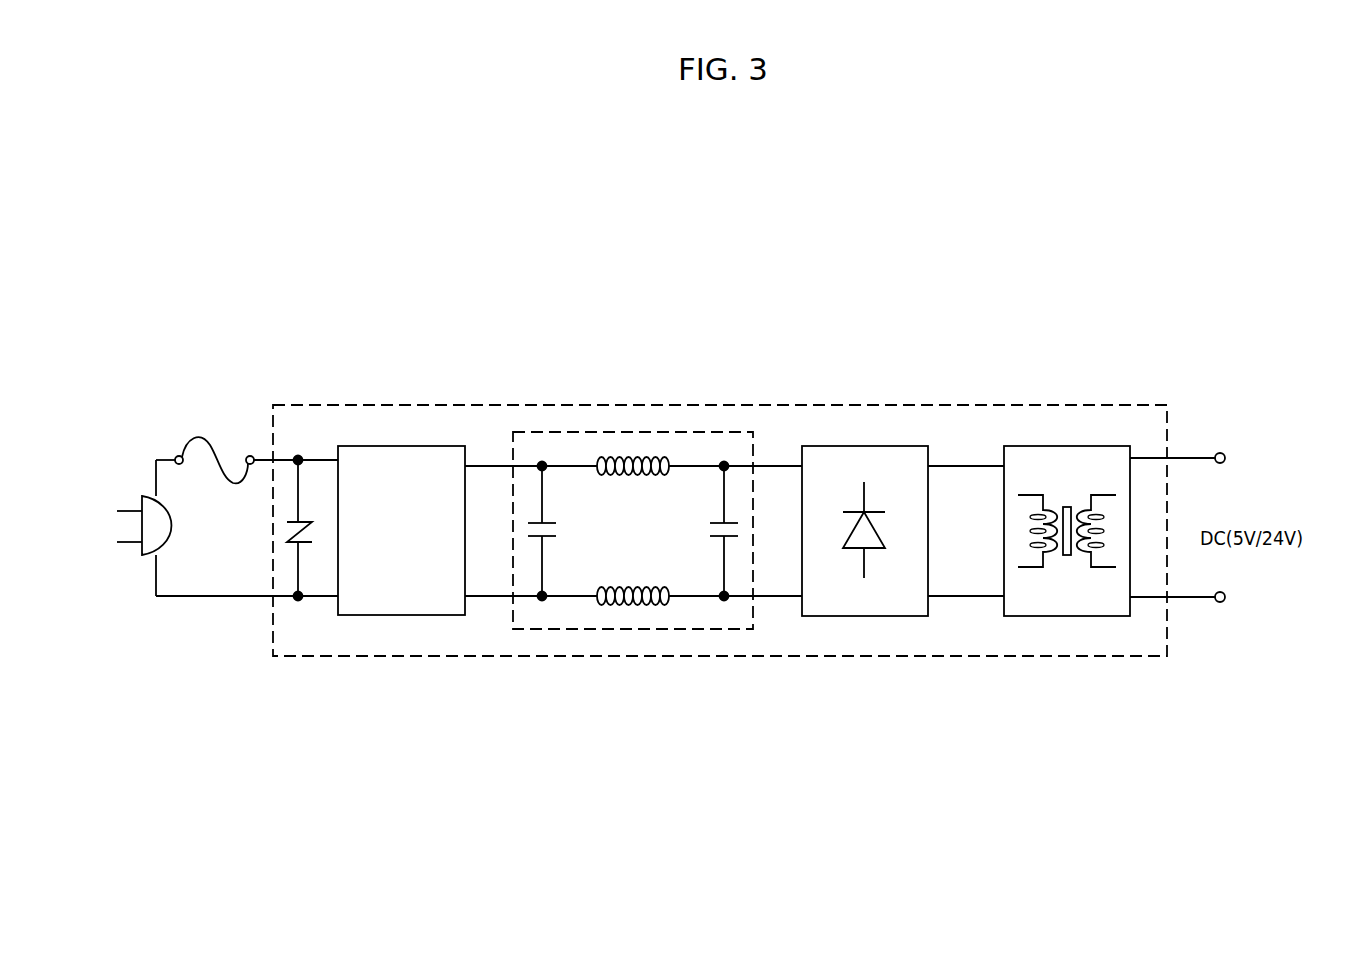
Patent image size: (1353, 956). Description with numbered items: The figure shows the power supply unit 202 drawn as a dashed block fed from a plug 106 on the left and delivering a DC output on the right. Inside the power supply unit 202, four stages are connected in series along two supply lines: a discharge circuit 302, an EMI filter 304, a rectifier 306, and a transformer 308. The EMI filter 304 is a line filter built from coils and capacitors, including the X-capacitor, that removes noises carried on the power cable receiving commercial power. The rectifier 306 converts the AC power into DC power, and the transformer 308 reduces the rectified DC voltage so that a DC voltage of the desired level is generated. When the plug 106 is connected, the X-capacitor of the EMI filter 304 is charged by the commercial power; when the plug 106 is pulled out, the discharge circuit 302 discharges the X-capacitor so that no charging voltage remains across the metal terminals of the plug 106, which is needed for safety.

The plug 106 is at (147, 507).
The power supply unit 202 is at (333, 405).
The discharge circuit 302 is at (415, 446).
The EMI filter 304 is at (640, 432).
The rectifier 306 is at (866, 446).
The transformer 308 is at (1070, 446).